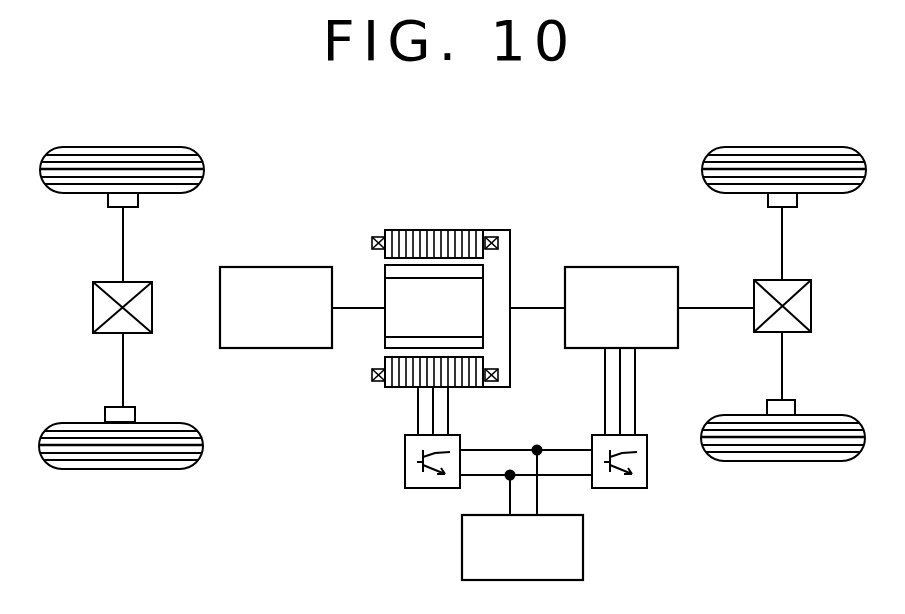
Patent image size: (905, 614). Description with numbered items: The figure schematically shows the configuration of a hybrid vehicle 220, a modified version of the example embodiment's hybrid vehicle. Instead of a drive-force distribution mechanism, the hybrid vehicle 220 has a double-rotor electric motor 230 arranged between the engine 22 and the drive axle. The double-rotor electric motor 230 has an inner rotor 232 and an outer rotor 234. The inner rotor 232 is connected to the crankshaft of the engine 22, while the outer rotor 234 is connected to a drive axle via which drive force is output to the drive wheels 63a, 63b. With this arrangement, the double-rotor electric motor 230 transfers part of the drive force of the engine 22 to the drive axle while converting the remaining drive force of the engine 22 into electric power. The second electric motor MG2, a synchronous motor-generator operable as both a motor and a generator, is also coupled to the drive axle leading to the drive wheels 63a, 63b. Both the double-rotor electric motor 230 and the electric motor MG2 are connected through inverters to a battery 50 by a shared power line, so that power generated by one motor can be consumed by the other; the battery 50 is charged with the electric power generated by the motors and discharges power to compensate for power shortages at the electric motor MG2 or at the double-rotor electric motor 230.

The engine 22 is at (276, 267).
The hybrid vehicle 220 is at (474, 240).
The double-rotor electric motor 230 is at (414, 245).
The inner rotor 232 is at (483, 153).
The outer rotor 234 is at (440, 230).
The second electric motor MG2 is at (620, 267).
The battery 50 is at (588, 543).
The drive wheel 63a is at (785, 145).
The drive wheel 63b is at (778, 461).